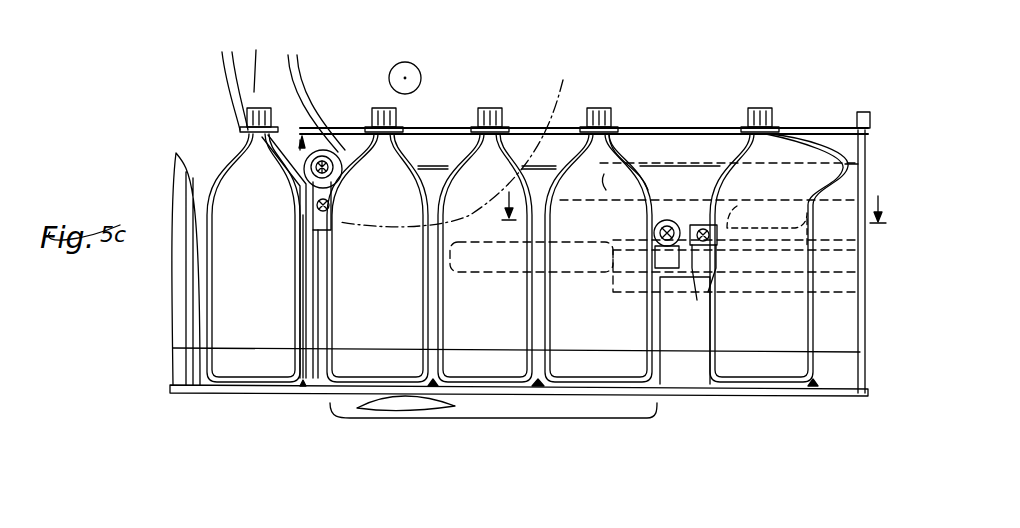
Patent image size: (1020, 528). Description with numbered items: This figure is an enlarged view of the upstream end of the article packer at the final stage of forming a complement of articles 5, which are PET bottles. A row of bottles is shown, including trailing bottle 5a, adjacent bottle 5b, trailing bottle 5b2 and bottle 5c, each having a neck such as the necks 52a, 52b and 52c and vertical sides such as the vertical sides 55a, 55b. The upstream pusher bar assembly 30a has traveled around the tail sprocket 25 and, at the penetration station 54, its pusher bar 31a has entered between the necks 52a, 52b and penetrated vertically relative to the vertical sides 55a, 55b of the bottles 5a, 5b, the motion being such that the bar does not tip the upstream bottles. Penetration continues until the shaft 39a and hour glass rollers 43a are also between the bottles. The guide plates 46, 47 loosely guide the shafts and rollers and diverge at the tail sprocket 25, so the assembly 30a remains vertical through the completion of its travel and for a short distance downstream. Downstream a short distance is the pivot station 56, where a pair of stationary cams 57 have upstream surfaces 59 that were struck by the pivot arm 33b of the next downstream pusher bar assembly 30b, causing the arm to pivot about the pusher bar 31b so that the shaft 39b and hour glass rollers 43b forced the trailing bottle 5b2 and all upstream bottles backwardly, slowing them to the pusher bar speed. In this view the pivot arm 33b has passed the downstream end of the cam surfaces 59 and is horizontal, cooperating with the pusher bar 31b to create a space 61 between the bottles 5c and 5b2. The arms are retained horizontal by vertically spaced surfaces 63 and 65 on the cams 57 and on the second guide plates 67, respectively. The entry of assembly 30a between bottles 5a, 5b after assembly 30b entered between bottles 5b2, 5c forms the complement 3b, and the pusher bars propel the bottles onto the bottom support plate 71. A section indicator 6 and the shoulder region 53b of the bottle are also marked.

The bottle complement 3b is at (495, 420).
The articles (PET bottles) 5 is at (182, 288).
The trailing bottle 5a is at (220, 325).
The adjacent bottle 5b is at (345, 289).
The trailing bottle 5b2 is at (603, 336).
The bottle 5c is at (760, 333).
The section arrows 6 is at (693, 196).
The tail sprocket 25 is at (459, 136).
The pusher bar assembly 30a is at (300, 150).
The pusher bar assembly 30b is at (667, 258).
The pusher bar 31a is at (313, 206).
The pusher bar 31b is at (712, 284).
The pivot arm 33b is at (692, 286).
The shaft 39a is at (340, 181).
The shaft 39b is at (655, 232).
The hour glass rollers 43a is at (343, 152).
The hour glass rollers 43b is at (680, 223).
The guide plate 46 is at (222, 58).
The guide plate 47 is at (292, 62).
The bottle neck 52a is at (245, 136).
The bottle neck 52b is at (400, 132).
The last bottle cap 52c is at (770, 128).
The dashed guide 53b is at (654, 224).
The penetration station 54 is at (318, 228).
The vertical side 55a is at (315, 268).
The vertical side 55b is at (327, 307).
The pivot station 56 is at (621, 152).
The stationary cams 57 is at (707, 163).
The cam upstream surface 59 is at (604, 186).
The space 61 is at (693, 380).
The cam surface 63 is at (795, 220).
The guide plate surface 65 is at (783, 260).
The second guide plates 67 is at (848, 297).
The bottom support plate 71 is at (757, 397).